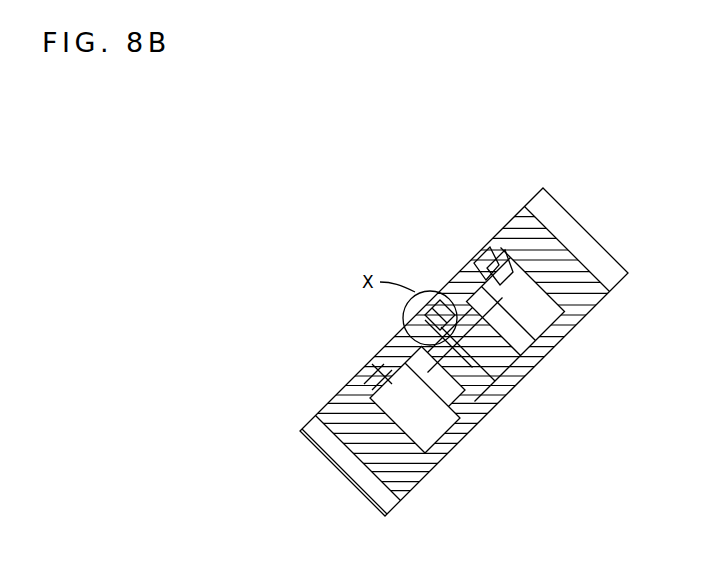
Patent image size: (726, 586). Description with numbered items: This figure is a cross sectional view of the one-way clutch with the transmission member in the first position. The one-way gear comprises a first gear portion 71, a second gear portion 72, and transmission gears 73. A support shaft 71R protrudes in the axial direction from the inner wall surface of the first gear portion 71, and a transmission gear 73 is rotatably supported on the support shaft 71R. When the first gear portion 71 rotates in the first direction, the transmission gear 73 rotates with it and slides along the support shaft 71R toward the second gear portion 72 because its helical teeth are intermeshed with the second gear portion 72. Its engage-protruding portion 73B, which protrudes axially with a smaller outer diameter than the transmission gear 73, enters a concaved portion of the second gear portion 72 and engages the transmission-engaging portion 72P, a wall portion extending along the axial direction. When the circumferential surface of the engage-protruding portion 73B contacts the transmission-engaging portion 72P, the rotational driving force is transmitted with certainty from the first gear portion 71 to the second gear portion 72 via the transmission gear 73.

The first gear portion 71 is at (598, 257).
The support shaft 71R is at (491, 413).
The second gear portion 72 is at (364, 371).
The transmission-engaging portion 72P is at (406, 347).
The transmission gear 73 is at (508, 312).
The engage-protruding portion 73B is at (452, 300).